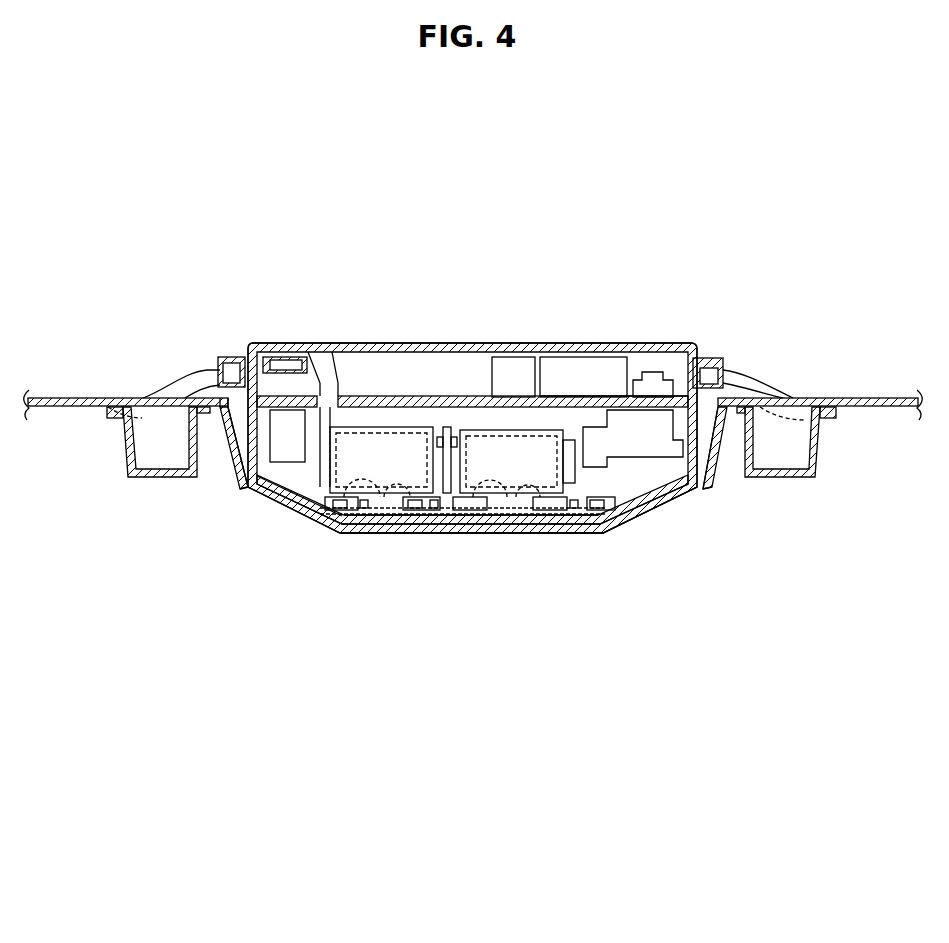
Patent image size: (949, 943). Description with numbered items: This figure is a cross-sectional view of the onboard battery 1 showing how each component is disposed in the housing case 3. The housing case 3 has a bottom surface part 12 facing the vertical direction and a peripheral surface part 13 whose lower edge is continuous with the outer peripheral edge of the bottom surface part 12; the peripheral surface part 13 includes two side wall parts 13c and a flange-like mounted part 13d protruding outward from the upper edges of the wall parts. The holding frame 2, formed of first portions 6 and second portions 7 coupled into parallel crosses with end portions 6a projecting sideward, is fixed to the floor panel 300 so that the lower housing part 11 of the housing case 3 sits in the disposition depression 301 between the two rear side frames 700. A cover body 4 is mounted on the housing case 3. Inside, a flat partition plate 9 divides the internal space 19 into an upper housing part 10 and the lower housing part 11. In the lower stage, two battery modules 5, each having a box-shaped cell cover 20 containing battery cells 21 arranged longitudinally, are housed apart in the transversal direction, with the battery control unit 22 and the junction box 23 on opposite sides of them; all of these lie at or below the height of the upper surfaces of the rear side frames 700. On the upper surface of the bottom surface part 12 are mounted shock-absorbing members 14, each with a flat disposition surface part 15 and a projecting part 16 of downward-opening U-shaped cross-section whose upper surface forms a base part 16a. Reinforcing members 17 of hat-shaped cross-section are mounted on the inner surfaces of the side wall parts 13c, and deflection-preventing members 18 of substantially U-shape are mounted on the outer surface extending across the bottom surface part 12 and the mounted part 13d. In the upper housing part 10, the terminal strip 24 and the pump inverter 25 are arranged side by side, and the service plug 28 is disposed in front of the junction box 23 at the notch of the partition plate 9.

The onboard battery 1 is at (667, 347).
The holding frame 2 is at (755, 386).
The housing case 3 is at (655, 510).
The cover body 4 is at (472, 343).
The battery module 5 is at (322, 480).
The first portion 6 is at (778, 395).
The end portion 6a is at (140, 412).
The second portion 7 is at (200, 358).
The partition plate 9 is at (585, 397).
The upper housing part 10 is at (281, 357).
The lower housing part 11 is at (238, 470).
The bottom surface part 12 is at (420, 519).
The peripheral surface part 13 is at (705, 417).
The side wall part 13c is at (228, 472).
The mounted part 13d is at (225, 347).
The shock-absorbing member 14 is at (350, 505).
The disposition surface part 15 is at (371, 508).
The projecting part 16 is at (340, 503).
The base part 16a is at (320, 497).
The reinforcing member 17 is at (255, 487).
The deflection-preventing member 18 is at (378, 511).
The internal space 19 is at (499, 424).
The cell cover 20 is at (380, 447).
The battery cell 21 is at (421, 397).
The battery control unit 22 is at (275, 515).
The junction box 23 is at (653, 447).
The terminal strip 24 is at (525, 375).
The pump inverter 25 is at (612, 378).
The service plug 28 is at (655, 380).
The floor panel 300 is at (52, 398).
The disposition depression 301 is at (232, 492).
The rear side frame 700 is at (143, 478).